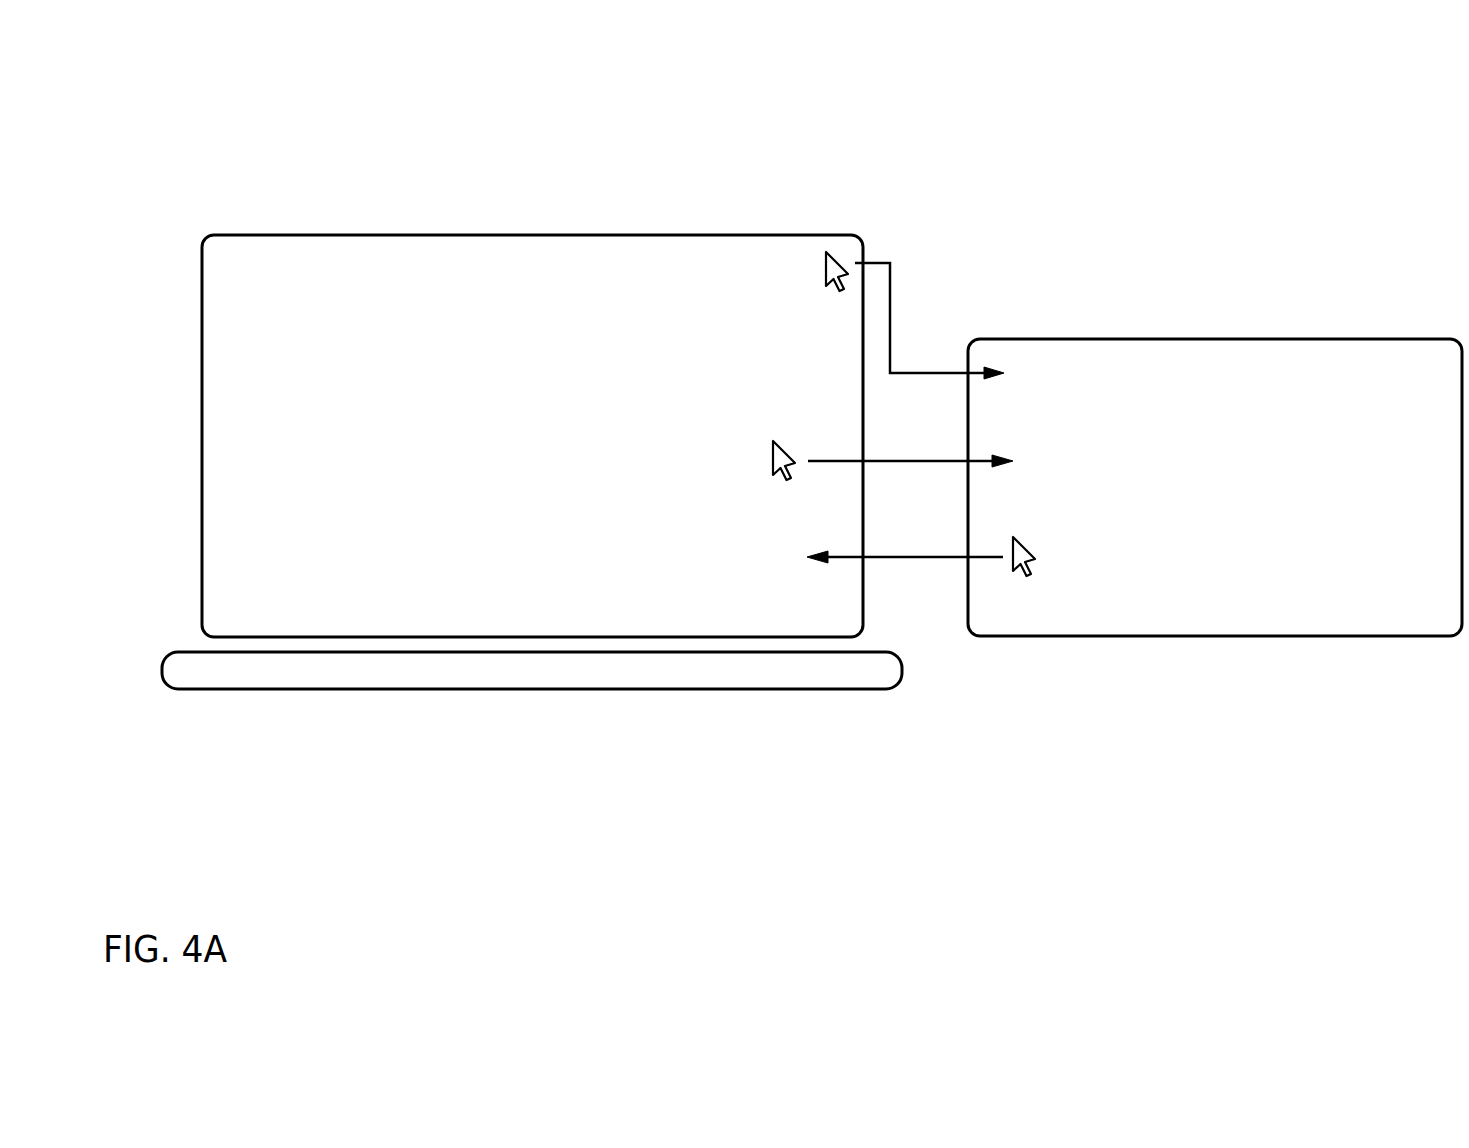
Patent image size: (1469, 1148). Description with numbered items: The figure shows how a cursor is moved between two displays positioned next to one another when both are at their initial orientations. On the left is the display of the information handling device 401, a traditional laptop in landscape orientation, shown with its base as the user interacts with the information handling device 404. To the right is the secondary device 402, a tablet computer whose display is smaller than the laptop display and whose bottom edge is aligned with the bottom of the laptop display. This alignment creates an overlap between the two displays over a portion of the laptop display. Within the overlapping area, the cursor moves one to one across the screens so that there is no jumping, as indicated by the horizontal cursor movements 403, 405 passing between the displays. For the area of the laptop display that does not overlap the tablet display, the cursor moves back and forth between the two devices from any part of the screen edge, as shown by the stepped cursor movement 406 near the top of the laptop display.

The display of the information handling device 401 is at (342, 220).
The secondary device 402 is at (1213, 283).
The cursor movement in overlapping display area 403 is at (880, 578).
The information handling device 404 is at (404, 703).
The cursor movement in overlapping display area 405 is at (797, 490).
The cursor movement in non-overlapping display area 406 is at (893, 218).